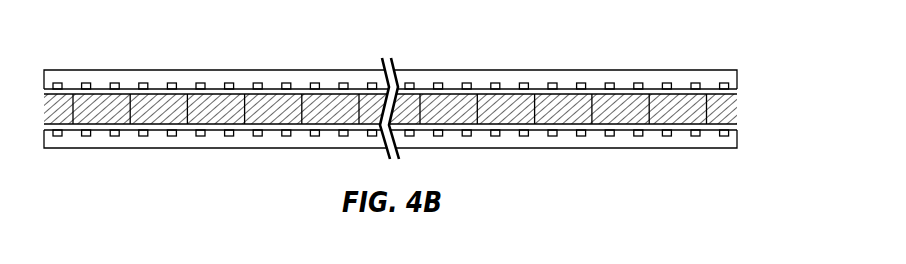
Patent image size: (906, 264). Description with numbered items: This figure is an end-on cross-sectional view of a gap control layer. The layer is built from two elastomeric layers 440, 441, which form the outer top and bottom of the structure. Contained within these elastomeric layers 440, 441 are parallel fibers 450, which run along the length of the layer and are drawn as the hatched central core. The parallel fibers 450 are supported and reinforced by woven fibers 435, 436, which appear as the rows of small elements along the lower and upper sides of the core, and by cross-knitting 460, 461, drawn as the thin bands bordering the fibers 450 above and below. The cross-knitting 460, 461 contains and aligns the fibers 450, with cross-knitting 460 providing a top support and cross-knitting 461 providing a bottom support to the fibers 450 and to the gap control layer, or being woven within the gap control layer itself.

The woven fibers 435 is at (143, 136).
The woven fibers 436 is at (143, 83).
The elastomeric layer 440 is at (680, 78).
The elastomeric layer 441 is at (680, 140).
The parallel fibers 450 is at (275, 100).
The cross-knitting 460 is at (562, 93).
The cross-knitting 461 is at (562, 128).